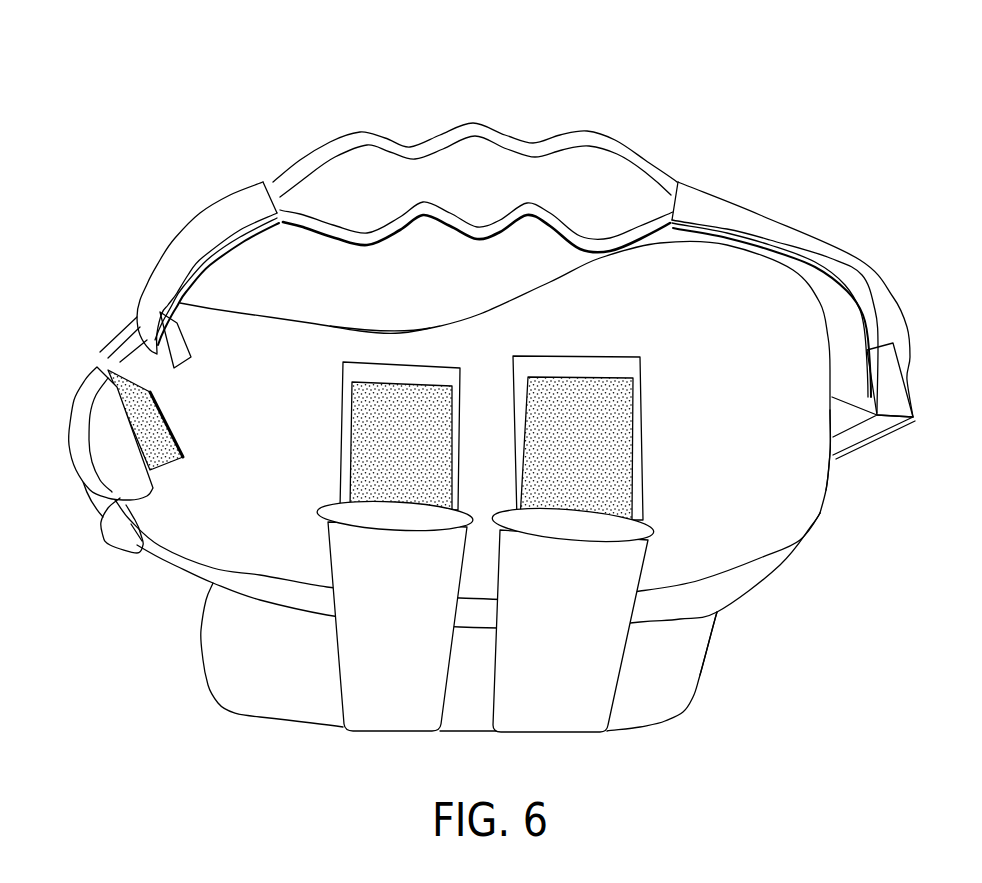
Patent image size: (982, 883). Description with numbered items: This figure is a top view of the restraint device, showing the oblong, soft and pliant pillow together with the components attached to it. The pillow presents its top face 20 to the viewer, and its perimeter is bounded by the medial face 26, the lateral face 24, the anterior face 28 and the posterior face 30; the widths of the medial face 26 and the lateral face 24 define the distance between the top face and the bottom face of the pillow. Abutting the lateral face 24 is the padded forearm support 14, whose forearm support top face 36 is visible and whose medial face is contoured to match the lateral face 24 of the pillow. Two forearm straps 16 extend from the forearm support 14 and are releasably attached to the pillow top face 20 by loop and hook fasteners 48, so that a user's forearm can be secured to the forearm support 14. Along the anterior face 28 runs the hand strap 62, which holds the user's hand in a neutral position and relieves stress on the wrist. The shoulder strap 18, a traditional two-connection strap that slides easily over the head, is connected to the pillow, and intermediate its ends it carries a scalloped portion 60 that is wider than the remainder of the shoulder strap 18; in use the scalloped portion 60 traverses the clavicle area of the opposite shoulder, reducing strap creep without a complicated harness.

The scalloped portion 60 is at (519, 86).
The shoulder strap 18 is at (710, 197).
The medial face 26 is at (394, 318).
The loop and hook fastener 48 is at (578, 400).
The top face 20 is at (692, 403).
The hand strap 62 is at (78, 420).
The posterior face 30 is at (836, 487).
The anterior face 28 is at (125, 522).
The lateral face 24 is at (760, 580).
The forearm support top face 36 is at (651, 678).
The forearm strap 16 is at (398, 722).
The padded forearm support 14 is at (670, 745).